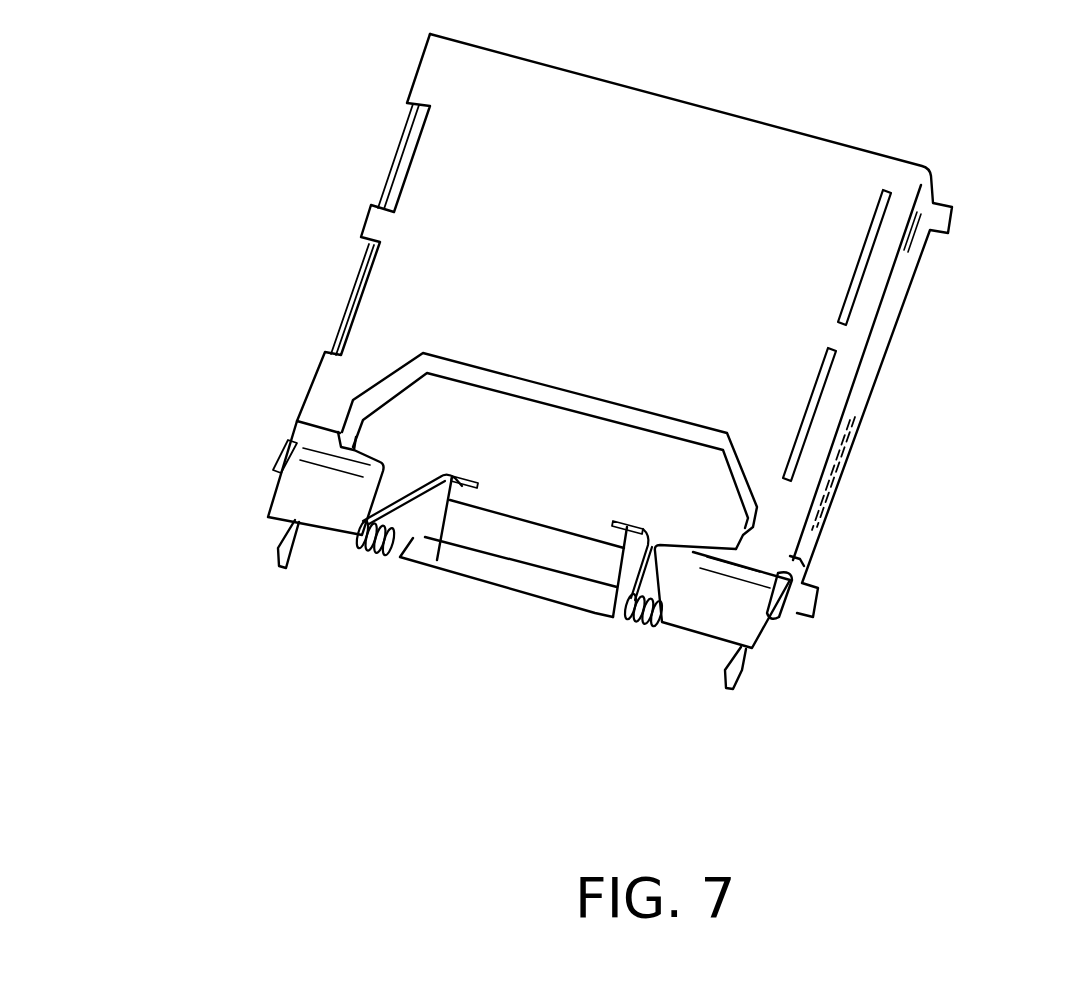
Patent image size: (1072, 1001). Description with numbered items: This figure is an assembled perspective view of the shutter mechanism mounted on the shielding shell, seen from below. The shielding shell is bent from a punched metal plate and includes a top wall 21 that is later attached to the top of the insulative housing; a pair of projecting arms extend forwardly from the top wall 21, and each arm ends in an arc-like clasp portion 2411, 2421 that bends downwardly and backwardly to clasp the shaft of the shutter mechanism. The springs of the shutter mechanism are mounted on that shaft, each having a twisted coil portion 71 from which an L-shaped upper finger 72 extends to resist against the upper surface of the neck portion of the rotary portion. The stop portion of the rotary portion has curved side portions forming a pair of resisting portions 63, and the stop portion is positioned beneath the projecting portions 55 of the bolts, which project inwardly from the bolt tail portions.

The top wall 21 is at (723, 283).
The projecting portion 55 is at (347, 437).
The resisting portion 63 is at (370, 428).
The twisted coil portion 71 is at (357, 555).
The L-shaped upper finger 72 is at (593, 613).
The arc-like clasp portion 2411 is at (720, 633).
The arc-like clasp portion 2421 is at (312, 518).